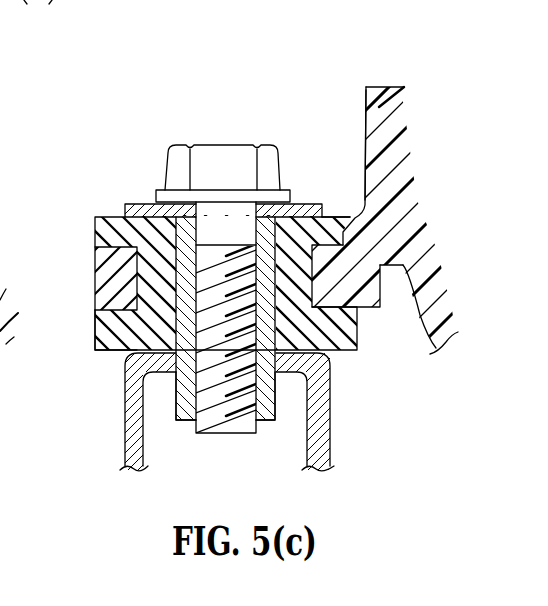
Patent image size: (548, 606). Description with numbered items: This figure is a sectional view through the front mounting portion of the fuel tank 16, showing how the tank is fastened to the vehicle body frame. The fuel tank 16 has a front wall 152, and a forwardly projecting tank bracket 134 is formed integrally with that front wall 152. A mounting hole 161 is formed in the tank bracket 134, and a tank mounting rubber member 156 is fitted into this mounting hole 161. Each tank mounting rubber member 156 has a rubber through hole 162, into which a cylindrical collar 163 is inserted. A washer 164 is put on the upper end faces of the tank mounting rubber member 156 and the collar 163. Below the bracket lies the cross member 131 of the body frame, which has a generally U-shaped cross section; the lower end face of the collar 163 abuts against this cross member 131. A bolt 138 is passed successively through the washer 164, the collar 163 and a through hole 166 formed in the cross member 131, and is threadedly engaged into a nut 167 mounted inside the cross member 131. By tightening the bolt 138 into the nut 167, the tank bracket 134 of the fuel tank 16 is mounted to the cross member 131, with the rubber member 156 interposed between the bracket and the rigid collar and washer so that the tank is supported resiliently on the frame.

The fuel tank 16 is at (383, 80).
The cross member 131 is at (330, 453).
The tank bracket 134 is at (365, 303).
The bolt 138 is at (229, 145).
The front wall 152 is at (368, 100).
The tank mounting rubber member 156 is at (112, 327).
The mounting hole 161 is at (138, 266).
The rubber through hole 162 is at (182, 252).
The collar 163 is at (302, 203).
The washer 164 is at (326, 204).
The through hole 166 is at (200, 378).
The nut 167 is at (287, 398).